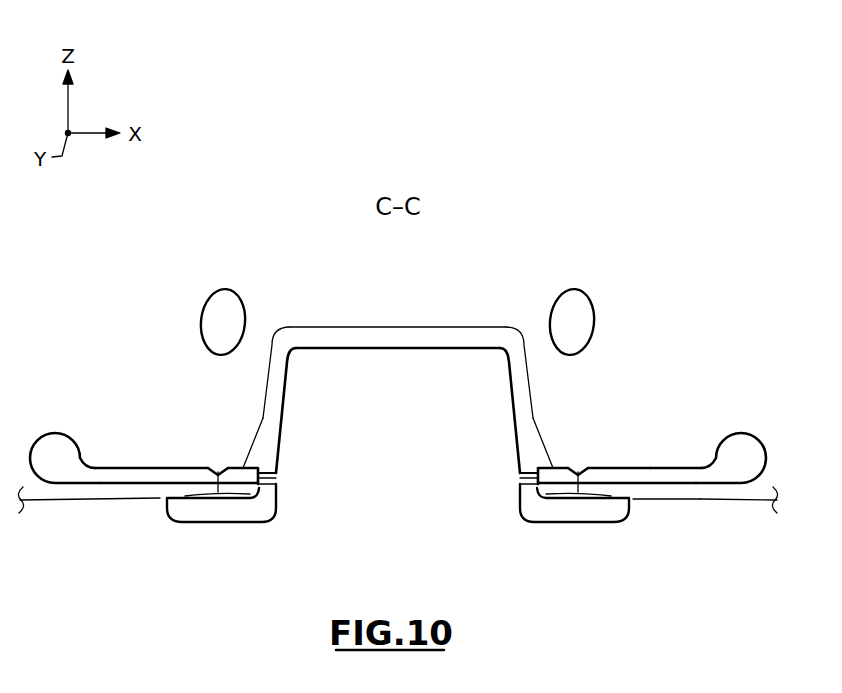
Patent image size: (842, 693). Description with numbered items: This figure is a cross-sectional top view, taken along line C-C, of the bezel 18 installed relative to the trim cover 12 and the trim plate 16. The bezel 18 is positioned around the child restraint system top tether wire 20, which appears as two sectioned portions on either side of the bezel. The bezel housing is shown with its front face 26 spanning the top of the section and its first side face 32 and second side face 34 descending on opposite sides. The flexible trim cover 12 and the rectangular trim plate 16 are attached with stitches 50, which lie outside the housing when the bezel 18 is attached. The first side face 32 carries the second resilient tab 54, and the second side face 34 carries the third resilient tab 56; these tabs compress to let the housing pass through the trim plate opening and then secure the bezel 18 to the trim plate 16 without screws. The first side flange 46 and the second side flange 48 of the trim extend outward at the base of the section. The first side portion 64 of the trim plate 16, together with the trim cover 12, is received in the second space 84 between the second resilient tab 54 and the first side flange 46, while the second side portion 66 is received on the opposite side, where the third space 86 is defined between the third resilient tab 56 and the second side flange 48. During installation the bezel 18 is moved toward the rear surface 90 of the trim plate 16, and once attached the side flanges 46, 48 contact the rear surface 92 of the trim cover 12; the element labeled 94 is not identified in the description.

The trim cover 12 is at (77, 501).
The trim plate 16 is at (101, 468).
The bezel 18 is at (430, 342).
The top tether wire 20 is at (215, 313).
The front face 26 is at (330, 340).
The first side face 32 is at (533, 413).
The second side face 34 is at (262, 410).
The first side flange 46 is at (573, 513).
The second side flange 48 is at (222, 513).
The stitches 50 is at (215, 470).
The second resilient tab 54 is at (539, 453).
The third resilient tab 56 is at (257, 453).
The first side portion 64 is at (633, 468).
The second side portion 66 is at (162, 468).
The second space 84 is at (519, 478).
The third space 86 is at (277, 478).
The rear surface 90 is at (653, 487).
The rear surface 92 is at (697, 500).
The flange upper surface 94 is at (668, 468).